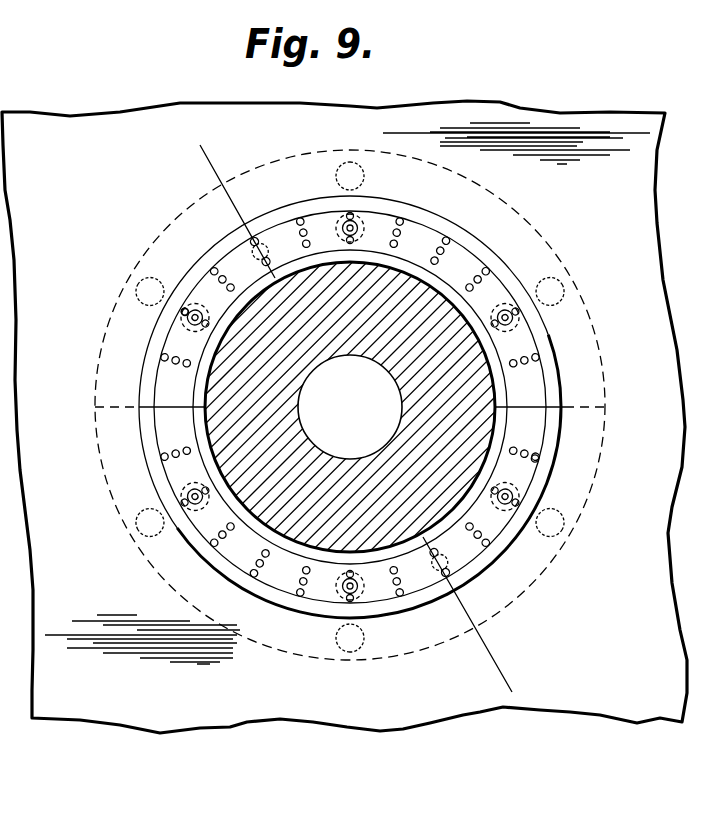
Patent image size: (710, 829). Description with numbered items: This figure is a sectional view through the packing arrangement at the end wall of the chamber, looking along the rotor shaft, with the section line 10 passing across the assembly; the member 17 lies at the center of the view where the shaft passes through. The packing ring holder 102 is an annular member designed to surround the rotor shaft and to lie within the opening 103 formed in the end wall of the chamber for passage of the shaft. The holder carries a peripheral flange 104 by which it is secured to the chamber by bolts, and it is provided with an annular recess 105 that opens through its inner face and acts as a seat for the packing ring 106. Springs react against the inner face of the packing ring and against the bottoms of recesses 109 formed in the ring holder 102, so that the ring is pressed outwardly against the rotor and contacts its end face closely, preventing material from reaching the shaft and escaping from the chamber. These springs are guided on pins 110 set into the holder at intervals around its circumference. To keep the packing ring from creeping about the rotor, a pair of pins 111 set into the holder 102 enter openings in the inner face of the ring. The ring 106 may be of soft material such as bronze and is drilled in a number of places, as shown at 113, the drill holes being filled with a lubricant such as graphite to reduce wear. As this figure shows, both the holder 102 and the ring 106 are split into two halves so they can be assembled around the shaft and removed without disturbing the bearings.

The section line 10- 10 is at (488, 665).
The hub disc 17 is at (257, 515).
The packing ring holder 102 is at (500, 448).
The opening 103 is at (407, 207).
The peripheral flange 104 is at (299, 158).
The annular recess 105 is at (500, 277).
The packing ring 106 is at (538, 397).
The recesses 109 is at (190, 293).
The pins 110 is at (188, 322).
The pins 111 is at (264, 240).
The drill holes 113 is at (539, 458).